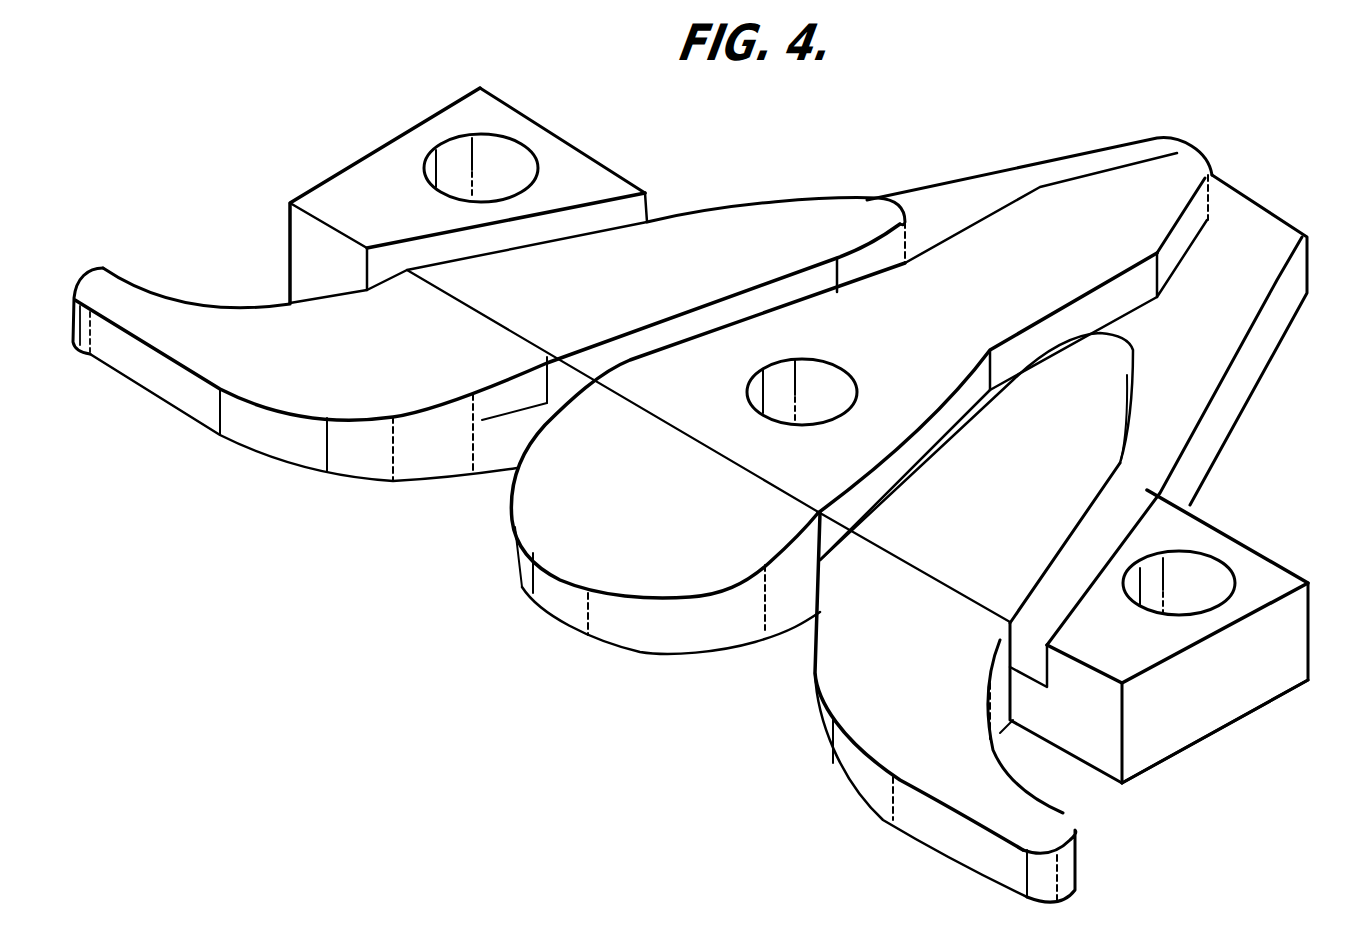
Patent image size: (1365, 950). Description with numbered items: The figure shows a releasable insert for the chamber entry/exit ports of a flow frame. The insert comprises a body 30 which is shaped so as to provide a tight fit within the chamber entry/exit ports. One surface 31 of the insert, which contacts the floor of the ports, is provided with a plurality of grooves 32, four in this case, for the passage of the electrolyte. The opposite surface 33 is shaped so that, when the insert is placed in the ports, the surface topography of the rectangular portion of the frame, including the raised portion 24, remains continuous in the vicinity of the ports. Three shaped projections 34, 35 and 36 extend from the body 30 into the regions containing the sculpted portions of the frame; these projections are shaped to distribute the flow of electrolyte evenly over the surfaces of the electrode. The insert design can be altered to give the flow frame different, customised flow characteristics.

The raised portion 24 is at (1170, 753).
The body 30 is at (1200, 453).
The surface 31 is at (893, 305).
The grooves 32 is at (587, 223).
The opposite surface 33 is at (1163, 763).
The shaped projection 34 is at (238, 437).
The shaped projection 35 is at (543, 603).
The shaped projection 36 is at (903, 808).